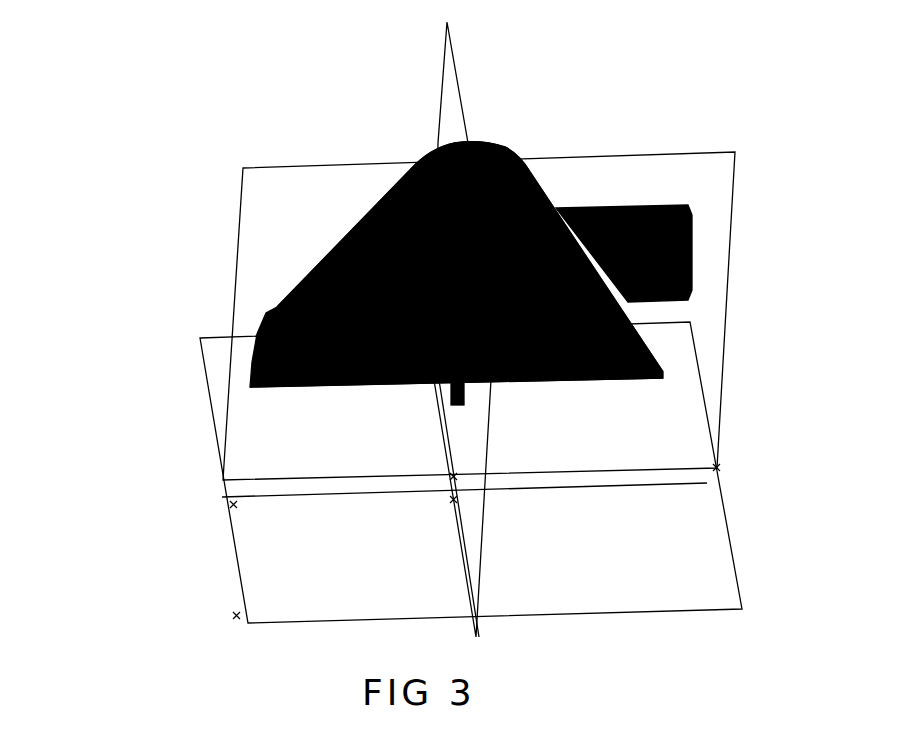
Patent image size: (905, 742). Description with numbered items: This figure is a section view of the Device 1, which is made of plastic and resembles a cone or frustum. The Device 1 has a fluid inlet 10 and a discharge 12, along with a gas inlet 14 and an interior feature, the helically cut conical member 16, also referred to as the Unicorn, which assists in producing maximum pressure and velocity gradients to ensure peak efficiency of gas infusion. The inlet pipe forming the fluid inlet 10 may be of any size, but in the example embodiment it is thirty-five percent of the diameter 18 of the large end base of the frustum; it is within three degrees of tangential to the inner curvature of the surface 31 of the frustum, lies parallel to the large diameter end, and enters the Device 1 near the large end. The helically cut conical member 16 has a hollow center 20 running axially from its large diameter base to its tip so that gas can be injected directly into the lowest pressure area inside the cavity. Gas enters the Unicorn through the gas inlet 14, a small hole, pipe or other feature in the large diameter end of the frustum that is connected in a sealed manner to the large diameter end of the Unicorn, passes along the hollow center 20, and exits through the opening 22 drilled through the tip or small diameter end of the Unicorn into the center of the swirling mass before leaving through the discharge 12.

The Device 1 is at (352, 96).
The fluid inlet 10 is at (693, 232).
The discharge 12 is at (492, 145).
The gas inlet 14 is at (457, 407).
The helically cut conical member 16 is at (340, 250).
The diameter 18 is at (253, 387).
The hollow center 20 is at (390, 383).
The opening 22 is at (393, 185).
The surface 31 is at (553, 203).